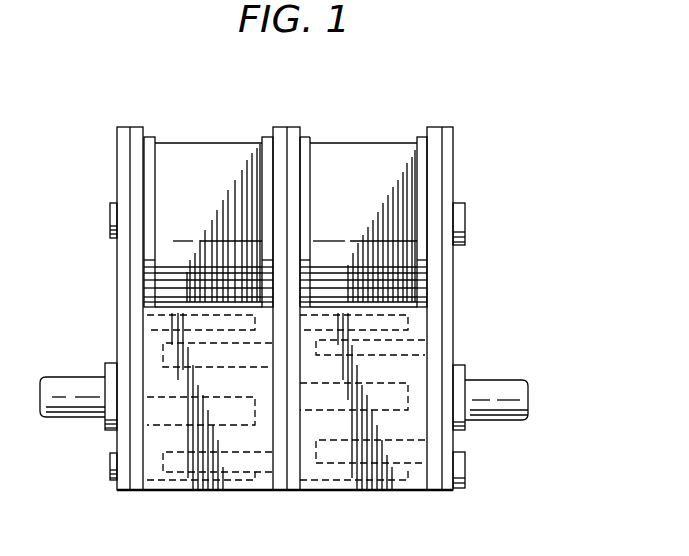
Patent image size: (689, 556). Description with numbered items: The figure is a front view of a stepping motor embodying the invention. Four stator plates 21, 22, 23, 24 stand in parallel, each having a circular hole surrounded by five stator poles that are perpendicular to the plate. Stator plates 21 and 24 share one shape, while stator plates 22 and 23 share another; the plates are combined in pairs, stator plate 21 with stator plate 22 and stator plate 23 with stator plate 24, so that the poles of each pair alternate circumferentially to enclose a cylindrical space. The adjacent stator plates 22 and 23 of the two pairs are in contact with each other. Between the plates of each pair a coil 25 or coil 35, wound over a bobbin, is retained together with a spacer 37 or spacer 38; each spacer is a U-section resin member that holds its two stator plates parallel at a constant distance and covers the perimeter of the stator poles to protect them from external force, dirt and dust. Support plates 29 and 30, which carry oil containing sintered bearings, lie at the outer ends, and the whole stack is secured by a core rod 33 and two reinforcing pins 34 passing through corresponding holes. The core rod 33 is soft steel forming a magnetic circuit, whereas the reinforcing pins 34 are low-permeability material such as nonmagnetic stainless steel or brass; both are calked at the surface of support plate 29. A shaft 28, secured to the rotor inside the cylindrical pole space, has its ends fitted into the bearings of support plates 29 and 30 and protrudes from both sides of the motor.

The stator plate 21 is at (140, 127).
The stator plate 22 is at (277, 127).
The stator plate 23 is at (292, 127).
The stator plate 24 is at (434, 127).
The coil 25 is at (203, 149).
The shaft 28 is at (530, 407).
The support plate 29 is at (117, 130).
The support plate 30 is at (454, 130).
The core rod 33 is at (466, 225).
The reinforcing pin 34 is at (466, 480).
The coil 35 is at (358, 150).
The spacer 37 is at (227, 492).
The spacer 38 is at (388, 492).